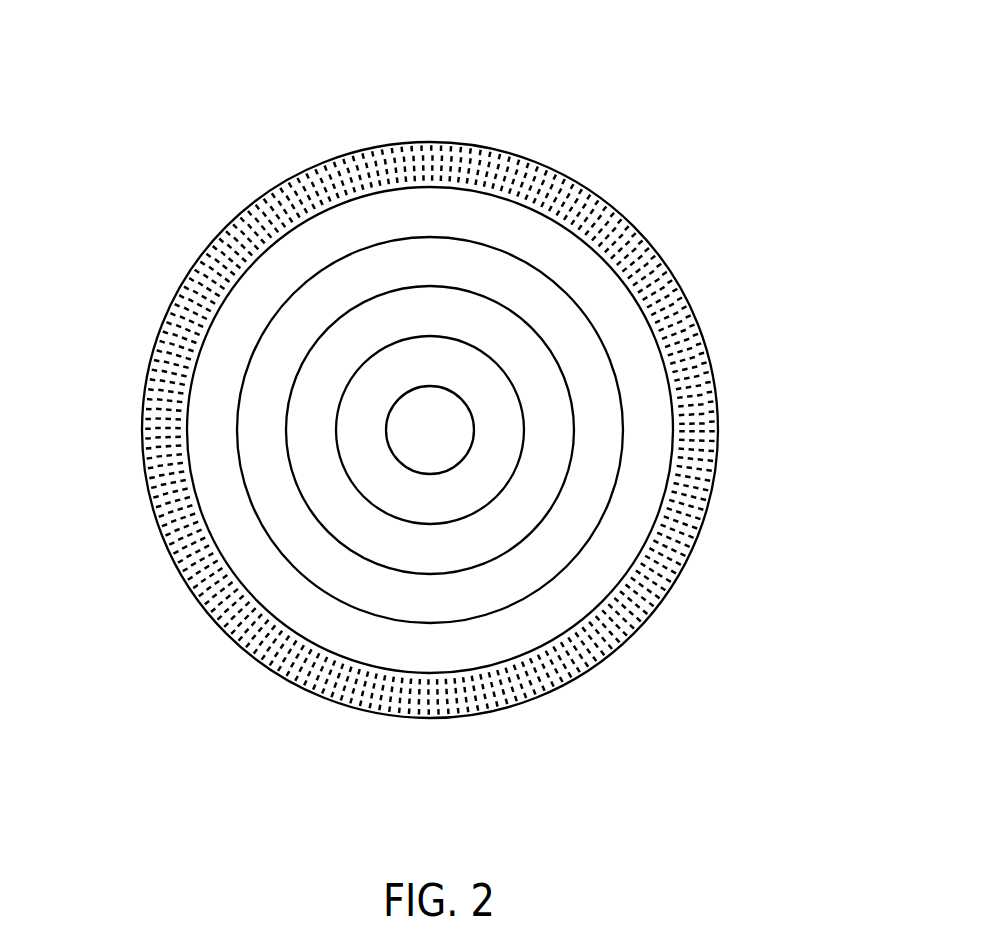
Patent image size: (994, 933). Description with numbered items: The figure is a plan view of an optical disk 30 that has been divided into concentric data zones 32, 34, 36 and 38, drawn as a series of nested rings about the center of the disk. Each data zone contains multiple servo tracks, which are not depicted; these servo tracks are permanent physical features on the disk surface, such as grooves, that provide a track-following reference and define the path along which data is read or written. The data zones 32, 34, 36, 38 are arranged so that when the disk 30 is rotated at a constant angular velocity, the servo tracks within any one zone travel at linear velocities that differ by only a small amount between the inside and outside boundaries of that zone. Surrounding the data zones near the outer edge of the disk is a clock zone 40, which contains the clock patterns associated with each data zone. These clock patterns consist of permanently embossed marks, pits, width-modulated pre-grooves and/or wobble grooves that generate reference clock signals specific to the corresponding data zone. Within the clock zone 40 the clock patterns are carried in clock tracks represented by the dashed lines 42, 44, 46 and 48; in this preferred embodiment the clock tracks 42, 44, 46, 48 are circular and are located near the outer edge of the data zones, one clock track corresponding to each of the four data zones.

The optical disk 30 is at (735, 70).
The data zone 32 is at (233, 322).
The data zone 34 is at (280, 353).
The data zone 36 is at (312, 390).
The data zone 38 is at (360, 427).
The clock zone 40 is at (462, 140).
The clock track 42 is at (683, 307).
The clock track 44 is at (693, 358).
The clock track 46 is at (693, 412).
The clock track 48 is at (685, 450).